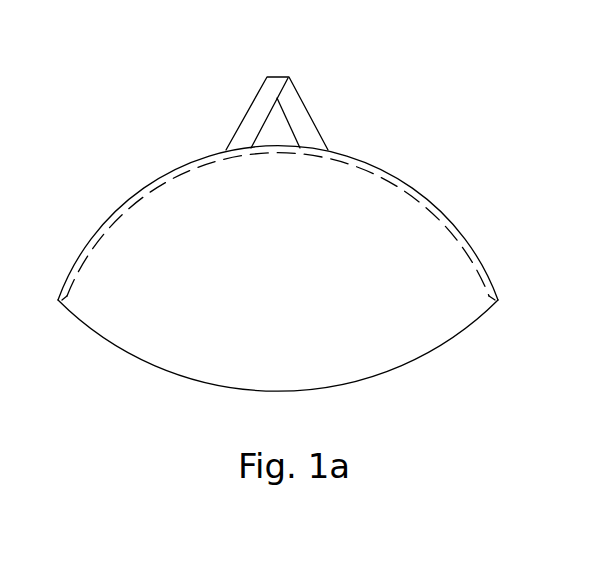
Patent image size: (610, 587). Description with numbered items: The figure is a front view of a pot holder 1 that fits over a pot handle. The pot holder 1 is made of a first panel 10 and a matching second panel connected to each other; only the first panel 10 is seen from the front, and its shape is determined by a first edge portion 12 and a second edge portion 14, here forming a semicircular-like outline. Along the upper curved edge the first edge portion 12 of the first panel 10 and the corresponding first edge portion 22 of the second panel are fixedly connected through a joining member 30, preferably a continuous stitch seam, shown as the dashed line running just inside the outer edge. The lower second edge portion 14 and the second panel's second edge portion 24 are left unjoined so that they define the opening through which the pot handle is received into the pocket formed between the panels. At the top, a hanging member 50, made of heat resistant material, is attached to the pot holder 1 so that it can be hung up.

The pot holder 1 is at (409, 126).
The first panel 10 is at (306, 266).
The first edge portion 12 is at (277, 212).
The first edge portion 22 is at (120, 208).
The second edge portion 14 is at (300, 373).
The second edge portion 24 is at (377, 375).
The joining member 30 is at (428, 218).
The hanging member 50 is at (289, 77).